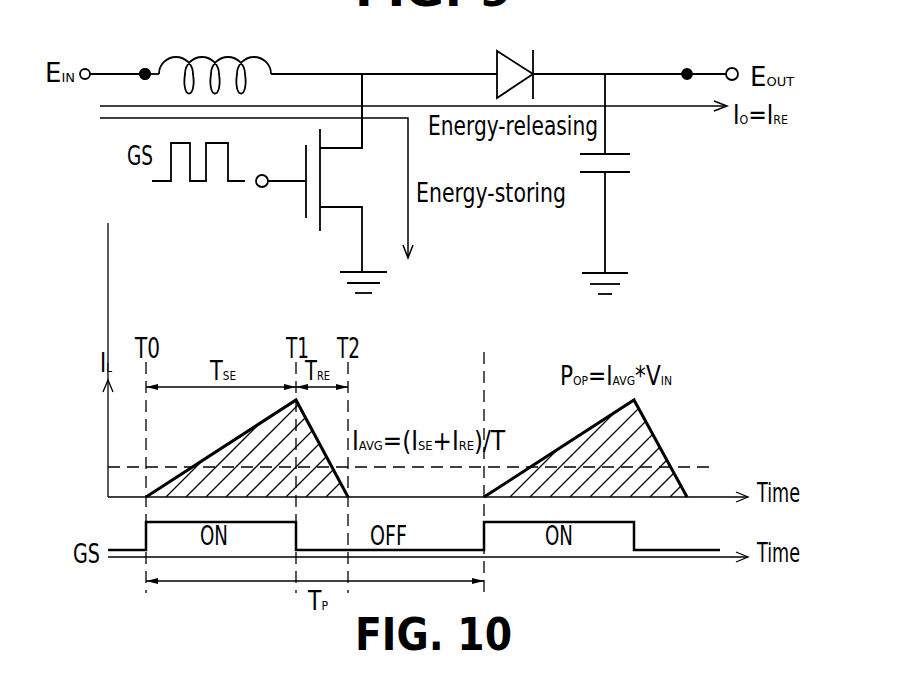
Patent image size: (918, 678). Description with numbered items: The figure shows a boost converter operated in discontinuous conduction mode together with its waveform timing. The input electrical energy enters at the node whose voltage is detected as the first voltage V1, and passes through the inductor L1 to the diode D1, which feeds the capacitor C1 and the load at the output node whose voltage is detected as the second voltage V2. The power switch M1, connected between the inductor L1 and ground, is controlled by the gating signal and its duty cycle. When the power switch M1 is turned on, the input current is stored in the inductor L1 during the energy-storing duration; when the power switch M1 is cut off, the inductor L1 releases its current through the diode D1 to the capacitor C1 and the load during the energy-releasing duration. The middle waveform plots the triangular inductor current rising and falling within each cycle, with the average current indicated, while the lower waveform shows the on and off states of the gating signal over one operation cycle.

The first voltage V1 is at (145, 68).
The second voltage V2 is at (687, 68).
The inductor L1 is at (215, 55).
The diode D1 is at (515, 57).
The power switch M1 is at (346, 183).
The capacitor C1 is at (623, 184).